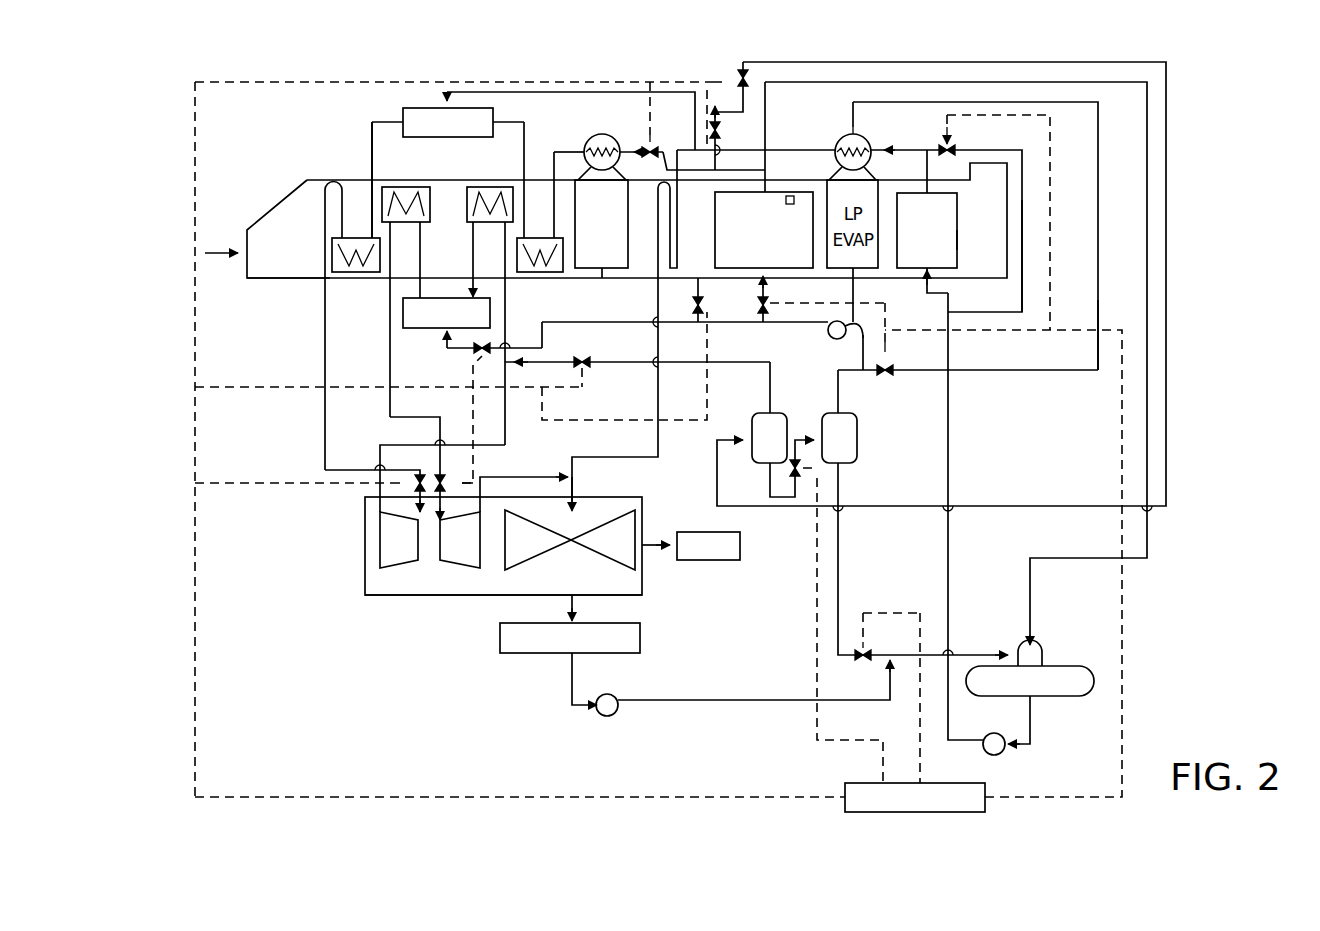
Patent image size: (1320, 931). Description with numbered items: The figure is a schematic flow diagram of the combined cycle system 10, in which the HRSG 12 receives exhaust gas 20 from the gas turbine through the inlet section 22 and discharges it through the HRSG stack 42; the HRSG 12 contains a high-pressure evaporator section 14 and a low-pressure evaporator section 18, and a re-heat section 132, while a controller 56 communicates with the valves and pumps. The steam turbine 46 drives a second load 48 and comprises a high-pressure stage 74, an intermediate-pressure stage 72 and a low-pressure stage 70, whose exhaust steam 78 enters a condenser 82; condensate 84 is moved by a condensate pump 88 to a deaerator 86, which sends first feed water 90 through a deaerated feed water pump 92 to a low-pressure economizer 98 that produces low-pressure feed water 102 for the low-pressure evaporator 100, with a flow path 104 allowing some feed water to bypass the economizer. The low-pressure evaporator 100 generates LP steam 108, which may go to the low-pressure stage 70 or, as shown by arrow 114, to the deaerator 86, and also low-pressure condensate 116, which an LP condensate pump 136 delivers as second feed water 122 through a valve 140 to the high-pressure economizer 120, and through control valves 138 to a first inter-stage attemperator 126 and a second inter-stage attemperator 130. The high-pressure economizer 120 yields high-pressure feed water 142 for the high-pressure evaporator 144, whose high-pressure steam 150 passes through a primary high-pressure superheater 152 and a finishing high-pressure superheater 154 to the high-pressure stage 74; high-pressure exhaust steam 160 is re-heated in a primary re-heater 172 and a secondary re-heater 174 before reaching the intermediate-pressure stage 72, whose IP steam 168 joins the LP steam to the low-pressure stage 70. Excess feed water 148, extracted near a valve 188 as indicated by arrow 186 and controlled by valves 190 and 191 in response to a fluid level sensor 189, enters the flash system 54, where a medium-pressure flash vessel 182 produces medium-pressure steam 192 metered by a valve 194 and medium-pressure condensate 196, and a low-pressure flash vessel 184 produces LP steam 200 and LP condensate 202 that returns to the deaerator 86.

The system 10 is at (150, 80).
The HRSG 12 is at (240, 290).
The high-pressure evaporator section 14 is at (635, 323).
The low-pressure evaporator section 18 is at (968, 215).
The exhaust gas 20 is at (225, 248).
The inlet section 22 is at (290, 280).
The HRSG stack 42 is at (1010, 188).
The steam turbine 46 is at (433, 597).
The second load 48 is at (742, 547).
The flash system 54 is at (812, 412).
The controller 56 is at (866, 782).
The low-pressure stage 70 is at (602, 563).
The intermediate-pressure stage 72 is at (482, 538).
The high-pressure stage 74 is at (379, 544).
The exhaust steam 78 is at (601, 595).
The condenser 82 is at (499, 640).
The condensate 84 is at (570, 685).
The deaerator 86 is at (1080, 668).
The condensate pump 88 is at (614, 716).
The first feed water 90 is at (947, 572).
The deaerated feed water pump 92 is at (1010, 752).
The low-pressure economizer 98 is at (958, 230).
The low-pressure evaporator 100 is at (372, 122).
The low-pressure feed water 102 is at (925, 150).
The flow path 104 is at (1024, 230).
The LP steam 108 is at (845, 108).
The arrow 114 is at (1140, 82).
The low-pressure condensate 116 is at (500, 92).
The high-pressure economizer 120 is at (686, 252).
The second feed water 122 is at (665, 158).
The first inter-stage attemperator 126 is at (430, 108).
The second inter-stage attemperator 130 is at (420, 330).
The re-heat section 132 is at (298, 138).
The LP condensate pump 136 is at (850, 342).
The control valves 138 is at (477, 360).
The valve 140 is at (886, 313).
The high-pressure feed water 142 is at (748, 150).
The high-pressure evaporator 144 is at (600, 282).
The excess feed water 148 is at (750, 108).
The high-pressure steam 150 is at (552, 168).
The primary high-pressure superheater 152 is at (517, 250).
The finishing high-pressure superheater 154 is at (352, 280).
The high-pressure exhaust steam 160 is at (389, 345).
The IP steam 168 is at (523, 477).
The primary re-heater 172 is at (467, 193).
The secondary re-heater 174 is at (408, 190).
The medium-pressure flash vessel 182 is at (752, 415).
The low-pressure flash vessel 184 is at (858, 443).
The arrow 186 is at (746, 70).
The valve 188 is at (645, 140).
The fluid level sensor 189 is at (600, 134).
The valve 190 is at (722, 80).
The valve 191 is at (693, 152).
The medium-pressure steam 192 is at (771, 365).
The valve 194 is at (590, 368).
The medium-pressure condensate 196 is at (770, 480).
The LP steam 200 is at (1022, 372).
The LP condensate 202 is at (840, 558).